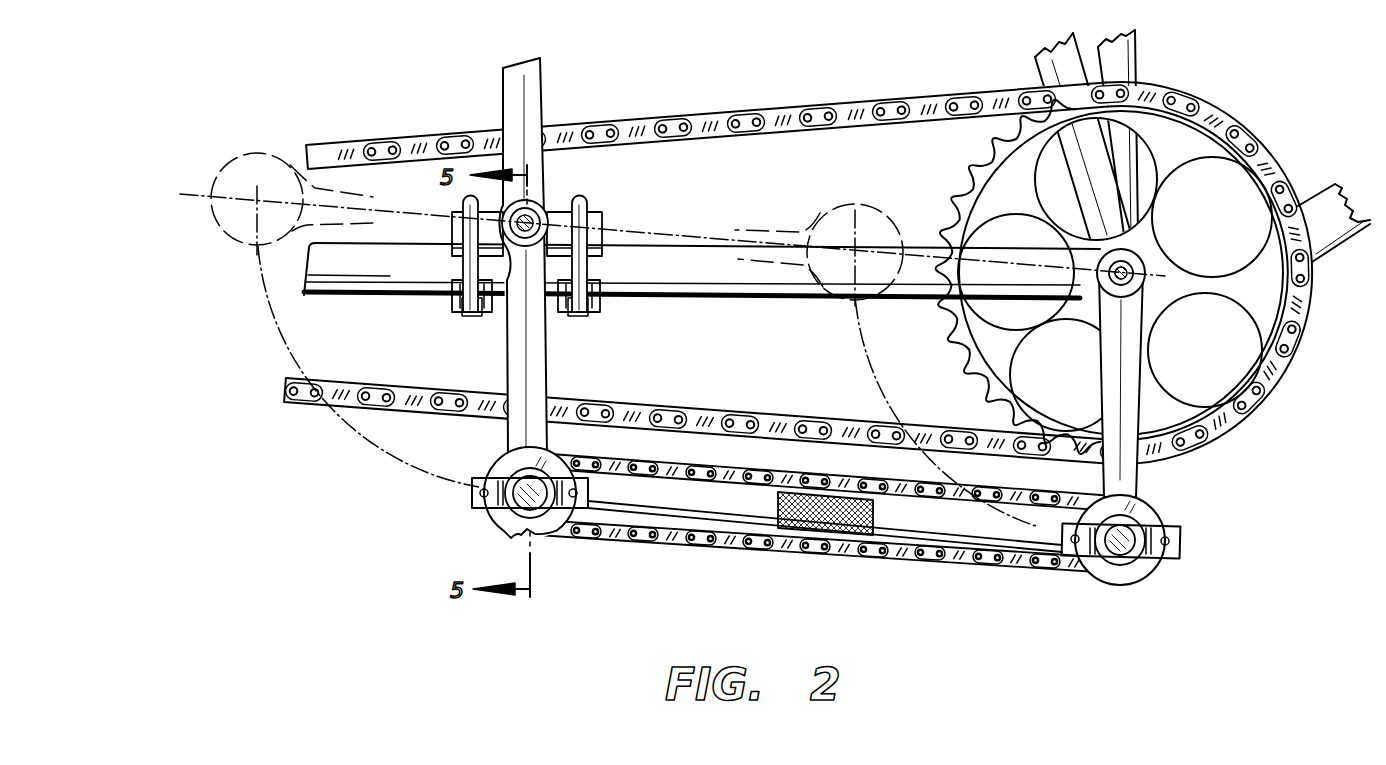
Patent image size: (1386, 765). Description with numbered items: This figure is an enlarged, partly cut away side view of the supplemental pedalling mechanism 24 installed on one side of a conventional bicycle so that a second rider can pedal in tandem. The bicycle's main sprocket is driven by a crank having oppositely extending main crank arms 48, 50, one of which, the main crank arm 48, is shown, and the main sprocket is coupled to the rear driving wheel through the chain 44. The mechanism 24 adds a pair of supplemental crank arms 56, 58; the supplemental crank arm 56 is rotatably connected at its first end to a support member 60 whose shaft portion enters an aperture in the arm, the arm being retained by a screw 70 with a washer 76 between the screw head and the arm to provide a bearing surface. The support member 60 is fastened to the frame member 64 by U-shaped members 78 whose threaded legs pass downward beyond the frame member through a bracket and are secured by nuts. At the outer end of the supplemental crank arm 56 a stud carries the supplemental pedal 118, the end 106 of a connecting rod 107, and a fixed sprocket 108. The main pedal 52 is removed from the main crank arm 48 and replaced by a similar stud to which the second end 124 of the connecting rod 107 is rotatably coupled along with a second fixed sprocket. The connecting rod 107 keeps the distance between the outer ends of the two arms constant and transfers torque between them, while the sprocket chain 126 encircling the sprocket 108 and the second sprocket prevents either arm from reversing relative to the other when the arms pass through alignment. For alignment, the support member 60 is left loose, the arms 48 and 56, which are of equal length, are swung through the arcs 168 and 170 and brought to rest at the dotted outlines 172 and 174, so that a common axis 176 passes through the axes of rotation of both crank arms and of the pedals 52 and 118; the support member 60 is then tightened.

The supplemental pedalling mechanism 24 is at (768, 345).
The chain 44 is at (375, 398).
The main crank arm 48 is at (1106, 380).
The main crank arm 50 is at (1133, 60).
The pedal 52 is at (1182, 540).
The supplemental crank arm 56 is at (549, 354).
The supplemental crank arm 58 is at (504, 89).
The support member 60 is at (606, 222).
The frame member 64 is at (790, 300).
The screw 70 is at (531, 210).
The washer 76 is at (507, 308).
The U-shaped member 78 is at (468, 232).
The end of connecting rod 106 is at (496, 456).
The connecting rod 107 is at (937, 530).
The sprocket 108 is at (538, 536).
The supplemental pedal 118 is at (472, 496).
The second end of connecting rod 124 is at (1157, 572).
The sprocket chain 126 is at (700, 545).
The arc 168 is at (278, 323).
The arc 170 is at (877, 380).
The dotted outline 172 is at (233, 156).
The dotted outline 174 is at (866, 206).
The axis 176 is at (720, 240).